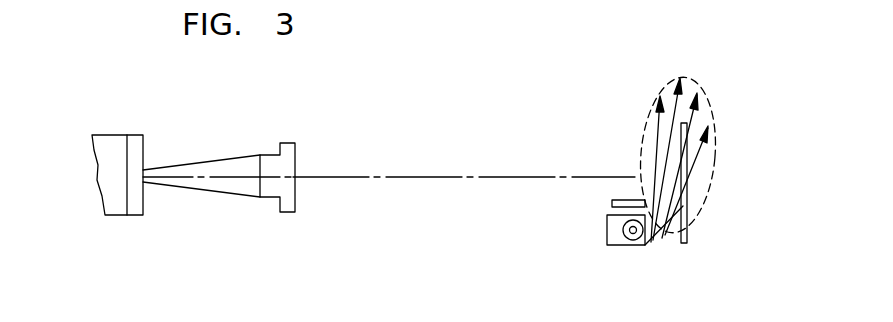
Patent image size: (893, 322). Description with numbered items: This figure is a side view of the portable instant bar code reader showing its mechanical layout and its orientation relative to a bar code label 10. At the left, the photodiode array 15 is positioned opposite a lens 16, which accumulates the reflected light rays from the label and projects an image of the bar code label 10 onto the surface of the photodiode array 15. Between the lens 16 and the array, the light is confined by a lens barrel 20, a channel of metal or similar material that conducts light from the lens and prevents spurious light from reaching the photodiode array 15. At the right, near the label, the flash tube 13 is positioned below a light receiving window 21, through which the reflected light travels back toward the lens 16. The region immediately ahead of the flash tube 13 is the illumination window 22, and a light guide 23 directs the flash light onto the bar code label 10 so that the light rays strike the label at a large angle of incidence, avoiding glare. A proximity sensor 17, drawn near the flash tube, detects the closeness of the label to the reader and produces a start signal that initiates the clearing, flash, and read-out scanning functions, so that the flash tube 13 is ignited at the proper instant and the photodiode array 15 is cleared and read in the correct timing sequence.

The bar code label 10 is at (697, 126).
The flash tube 13 is at (627, 246).
The photodiode array 15 is at (133, 205).
The lens 16 is at (272, 190).
The proximity sensor 17 is at (627, 200).
The lens barrel 20 is at (237, 188).
The light receiving window 21 is at (652, 176).
The illumination window 22 is at (657, 214).
The light guide 23 is at (665, 234).